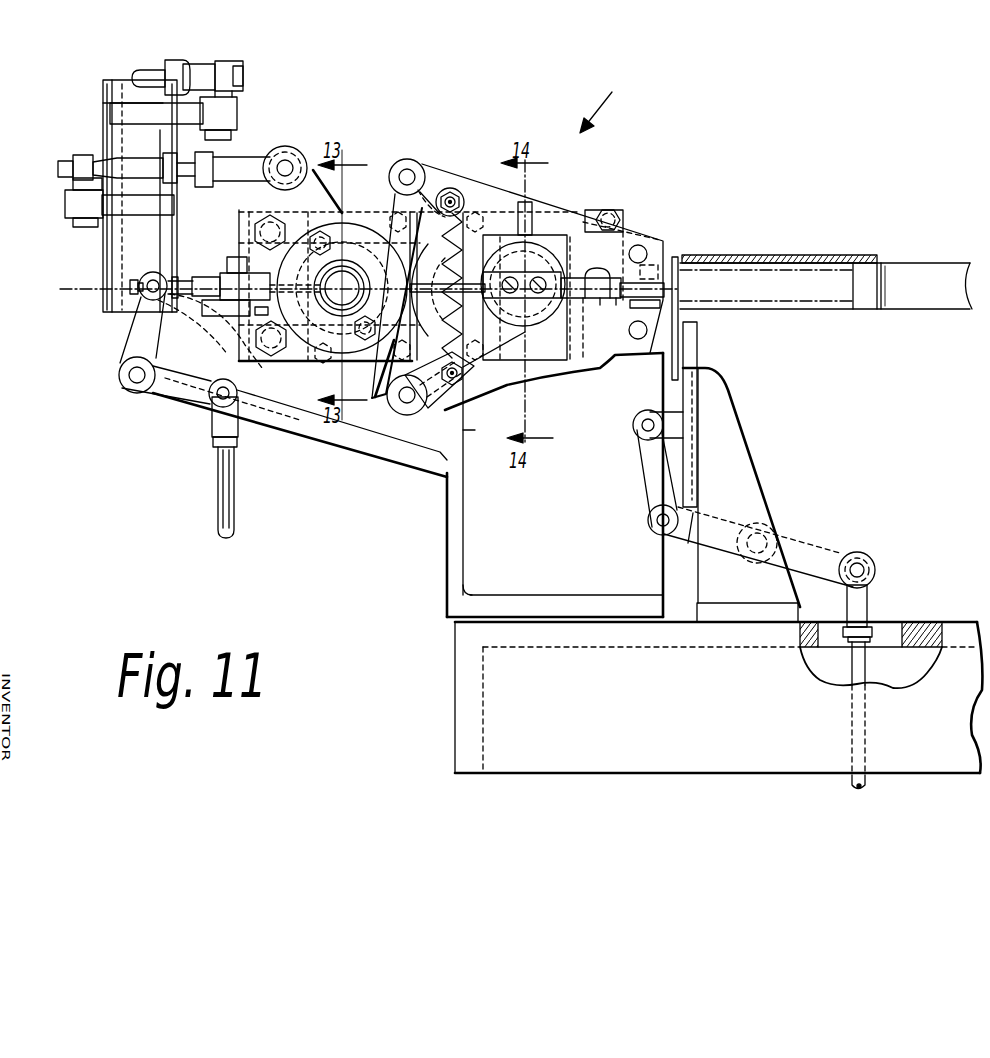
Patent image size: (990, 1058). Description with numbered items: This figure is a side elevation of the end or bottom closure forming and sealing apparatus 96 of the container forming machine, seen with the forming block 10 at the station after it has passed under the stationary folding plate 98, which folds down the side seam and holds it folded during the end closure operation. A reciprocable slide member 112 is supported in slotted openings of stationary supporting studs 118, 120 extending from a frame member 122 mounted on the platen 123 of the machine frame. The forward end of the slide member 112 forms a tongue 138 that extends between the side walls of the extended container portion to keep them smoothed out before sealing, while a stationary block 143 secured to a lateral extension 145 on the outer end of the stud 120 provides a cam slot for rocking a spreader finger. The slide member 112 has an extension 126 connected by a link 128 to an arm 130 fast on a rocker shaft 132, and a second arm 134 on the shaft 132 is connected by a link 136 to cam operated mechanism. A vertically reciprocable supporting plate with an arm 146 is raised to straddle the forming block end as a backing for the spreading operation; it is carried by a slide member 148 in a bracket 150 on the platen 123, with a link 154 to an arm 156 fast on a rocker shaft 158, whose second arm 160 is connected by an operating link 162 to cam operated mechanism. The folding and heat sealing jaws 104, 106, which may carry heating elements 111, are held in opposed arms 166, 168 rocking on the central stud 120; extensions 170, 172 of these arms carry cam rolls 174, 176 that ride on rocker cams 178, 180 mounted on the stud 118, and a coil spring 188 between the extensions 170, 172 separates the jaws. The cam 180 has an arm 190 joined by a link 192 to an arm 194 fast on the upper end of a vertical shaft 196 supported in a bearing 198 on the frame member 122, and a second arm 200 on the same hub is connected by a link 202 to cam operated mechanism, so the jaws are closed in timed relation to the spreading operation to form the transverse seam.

The forming block 10 is at (868, 300).
The end closure forming and sealing apparatus 96 is at (610, 101).
The folding plate 98 is at (815, 257).
The sealing jaw 104 is at (680, 277).
The sealing jaw 106 is at (645, 296).
The heating elements 111 is at (638, 244).
The slide member 112 is at (465, 283).
The supporting stud 118 is at (356, 262).
The supporting stud 120 is at (533, 263).
The frame member 122 is at (587, 210).
The platen 123 is at (455, 658).
The extension 126 is at (293, 362).
The link 128 is at (183, 281).
The arm 130 is at (130, 343).
The rocker shaft 132 is at (133, 382).
The second arm 134 is at (195, 407).
The link 136 is at (234, 493).
The tongue 138 is at (652, 268).
The stationary block 143 is at (580, 298).
The lateral extension 145 is at (488, 404).
The arm 146 is at (681, 277).
The slide member 148 is at (698, 402).
The bracket 150 is at (750, 467).
The link 154 is at (650, 477).
The arm 156 is at (692, 547).
The rocker shaft 158 is at (757, 552).
The second arm 160 is at (823, 547).
The operating link 162 is at (868, 600).
The holding arm 166 is at (612, 213).
The holding arm 168 is at (583, 390).
The extension 170 is at (452, 190).
The extension 172 is at (484, 439).
The cam roll 174 is at (424, 163).
The cam roll 176 is at (405, 415).
The rocker cam 178 is at (400, 186).
The rocker cam 180 is at (395, 340).
The coil spring 188 is at (407, 405).
The arm 190 is at (317, 166).
The link 192 is at (243, 160).
The arm 194 is at (143, 207).
The vertical shaft 196 is at (123, 137).
The bearing 198 is at (104, 283).
The second arm 200 is at (124, 159).
The link 202 is at (160, 76).